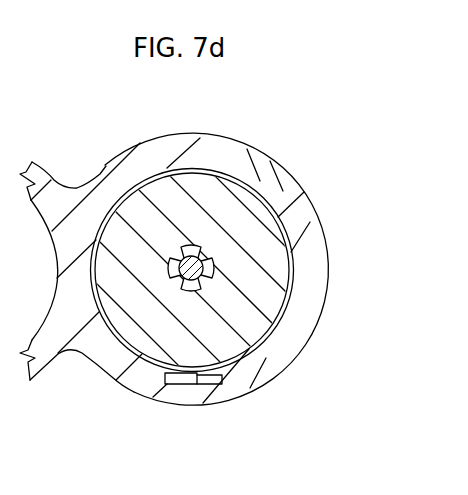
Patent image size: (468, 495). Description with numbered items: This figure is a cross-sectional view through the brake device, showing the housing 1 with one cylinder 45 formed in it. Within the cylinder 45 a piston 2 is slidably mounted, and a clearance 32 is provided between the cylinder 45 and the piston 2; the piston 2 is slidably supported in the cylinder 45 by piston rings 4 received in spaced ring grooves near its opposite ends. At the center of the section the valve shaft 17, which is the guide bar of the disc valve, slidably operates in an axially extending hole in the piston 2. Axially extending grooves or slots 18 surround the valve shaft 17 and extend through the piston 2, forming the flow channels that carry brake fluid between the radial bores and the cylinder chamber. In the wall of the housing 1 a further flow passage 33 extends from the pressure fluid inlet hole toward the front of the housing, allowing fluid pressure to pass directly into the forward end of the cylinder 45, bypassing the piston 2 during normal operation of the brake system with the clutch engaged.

The housing 1 is at (165, 150).
The piston 2 is at (238, 212).
The piston rings 4 is at (197, 383).
The valve shaft 17 is at (290, 252).
The axially extending grooves 18 is at (207, 262).
The clearance 32 is at (227, 170).
The flow passage 33 is at (183, 378).
The cylinder 45 is at (289, 278).